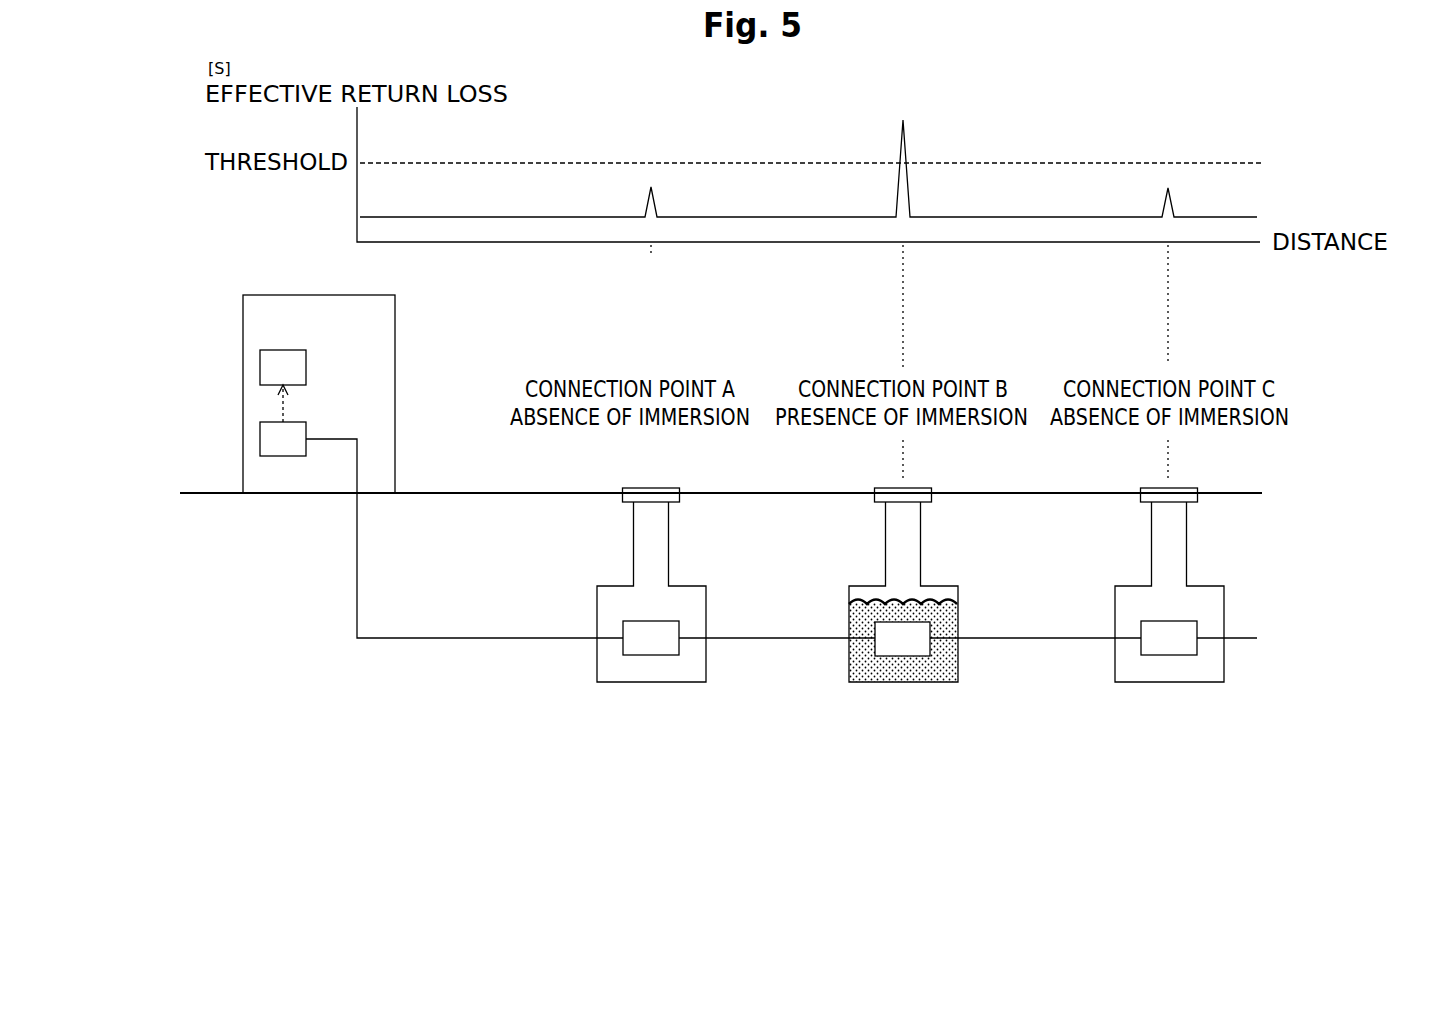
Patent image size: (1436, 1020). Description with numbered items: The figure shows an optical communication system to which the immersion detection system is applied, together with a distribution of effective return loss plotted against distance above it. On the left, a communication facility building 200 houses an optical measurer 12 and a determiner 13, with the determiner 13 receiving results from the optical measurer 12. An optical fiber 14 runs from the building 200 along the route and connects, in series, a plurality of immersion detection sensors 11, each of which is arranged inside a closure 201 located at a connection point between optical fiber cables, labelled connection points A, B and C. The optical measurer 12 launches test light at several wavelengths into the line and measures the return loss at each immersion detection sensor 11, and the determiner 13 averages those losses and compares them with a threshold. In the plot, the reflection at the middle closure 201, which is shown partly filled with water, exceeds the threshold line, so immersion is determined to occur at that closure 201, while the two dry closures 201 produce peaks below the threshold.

The communication facility building 200 is at (265, 295).
The optical measurer 12 is at (258, 442).
The determiner 13 is at (258, 372).
The optical fiber 14 is at (498, 642).
The closure 201 is at (597, 607).
The immersion detection sensor 11 is at (644, 661).